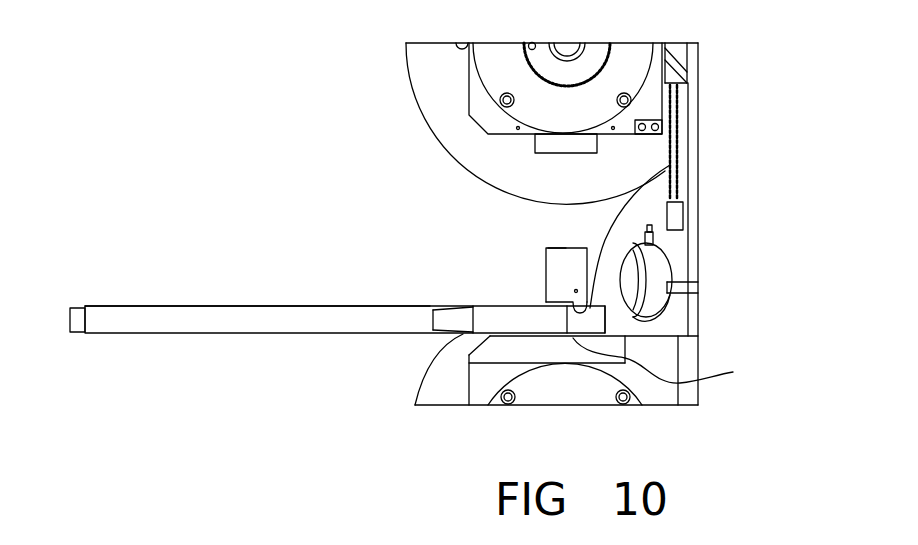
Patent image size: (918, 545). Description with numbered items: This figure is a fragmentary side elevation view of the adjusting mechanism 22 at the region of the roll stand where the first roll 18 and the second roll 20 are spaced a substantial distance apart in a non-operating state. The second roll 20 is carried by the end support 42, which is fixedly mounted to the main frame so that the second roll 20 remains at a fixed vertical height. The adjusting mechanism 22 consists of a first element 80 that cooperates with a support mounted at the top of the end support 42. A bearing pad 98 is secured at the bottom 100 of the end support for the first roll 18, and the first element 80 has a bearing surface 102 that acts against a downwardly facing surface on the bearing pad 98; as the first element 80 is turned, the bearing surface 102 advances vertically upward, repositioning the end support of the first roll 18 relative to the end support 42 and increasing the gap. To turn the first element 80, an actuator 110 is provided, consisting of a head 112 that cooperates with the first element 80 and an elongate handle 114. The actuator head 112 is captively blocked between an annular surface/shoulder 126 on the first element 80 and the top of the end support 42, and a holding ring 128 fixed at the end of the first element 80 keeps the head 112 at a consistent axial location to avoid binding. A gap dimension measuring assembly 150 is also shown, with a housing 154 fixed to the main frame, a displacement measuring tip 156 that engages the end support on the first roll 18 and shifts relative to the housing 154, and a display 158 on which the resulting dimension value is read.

The first roll 18 is at (432, 80).
The adjusting mechanism 22 is at (450, 247).
The bottom of the end support 100 is at (518, 136).
The bearing pad 98 is at (563, 145).
The bearing surface 102 is at (557, 247).
The first element 80 is at (563, 276).
The actuator 110 is at (252, 318).
The elongate handle 114 is at (362, 334).
The actuator head 112 is at (517, 322).
The annular surface/shoulder 126 is at (632, 192).
The displacement measuring tip 156 is at (648, 225).
The housing 154 is at (630, 267).
The gap dimension measuring assembly 150 is at (650, 278).
The display 158 is at (667, 305).
The holding ring 128 is at (676, 361).
The second roll 20 is at (442, 392).
The end support 42 is at (560, 378).